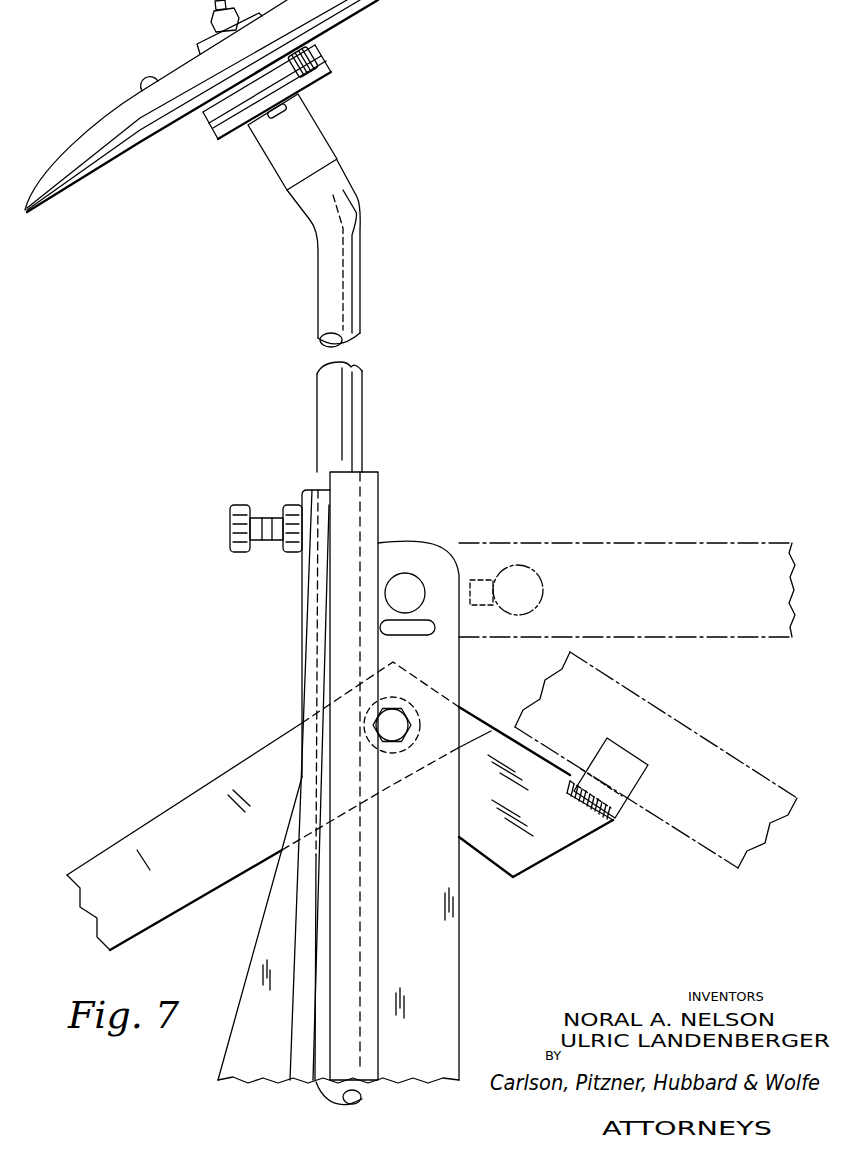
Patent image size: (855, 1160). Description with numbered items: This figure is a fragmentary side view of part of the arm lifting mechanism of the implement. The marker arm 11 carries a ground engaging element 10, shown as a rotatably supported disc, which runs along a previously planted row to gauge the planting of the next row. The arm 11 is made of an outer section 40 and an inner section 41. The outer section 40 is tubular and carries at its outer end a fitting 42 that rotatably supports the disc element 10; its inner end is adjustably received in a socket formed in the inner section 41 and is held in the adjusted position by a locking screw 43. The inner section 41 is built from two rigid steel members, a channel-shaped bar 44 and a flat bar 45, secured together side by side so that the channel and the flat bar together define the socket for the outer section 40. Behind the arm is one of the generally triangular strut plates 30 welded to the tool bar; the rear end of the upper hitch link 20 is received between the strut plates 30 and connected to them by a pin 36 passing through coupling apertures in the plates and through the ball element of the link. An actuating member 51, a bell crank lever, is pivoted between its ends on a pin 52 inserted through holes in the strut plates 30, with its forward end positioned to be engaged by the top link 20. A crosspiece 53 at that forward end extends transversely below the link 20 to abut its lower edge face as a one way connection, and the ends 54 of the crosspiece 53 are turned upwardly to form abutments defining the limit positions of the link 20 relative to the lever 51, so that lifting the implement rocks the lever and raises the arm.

The ground engaging element 10 is at (380, 1).
The elongated arm 11 is at (367, 321).
The upper control link 20 is at (572, 543).
The strut plate 30 is at (233, 1042).
The pin 36 is at (406, 590).
The outer arm section 40 is at (355, 285).
The inner arm section 41 is at (380, 482).
The fitting 42 is at (317, 118).
The locking screw 43 is at (230, 516).
The channel-shaped bar 44 is at (372, 1062).
The flat bar 45 is at (298, 1074).
The actuating member 51 is at (212, 782).
The pin 52 is at (397, 733).
The crosspiece 53 is at (620, 806).
The turned-up end 54 is at (602, 747).